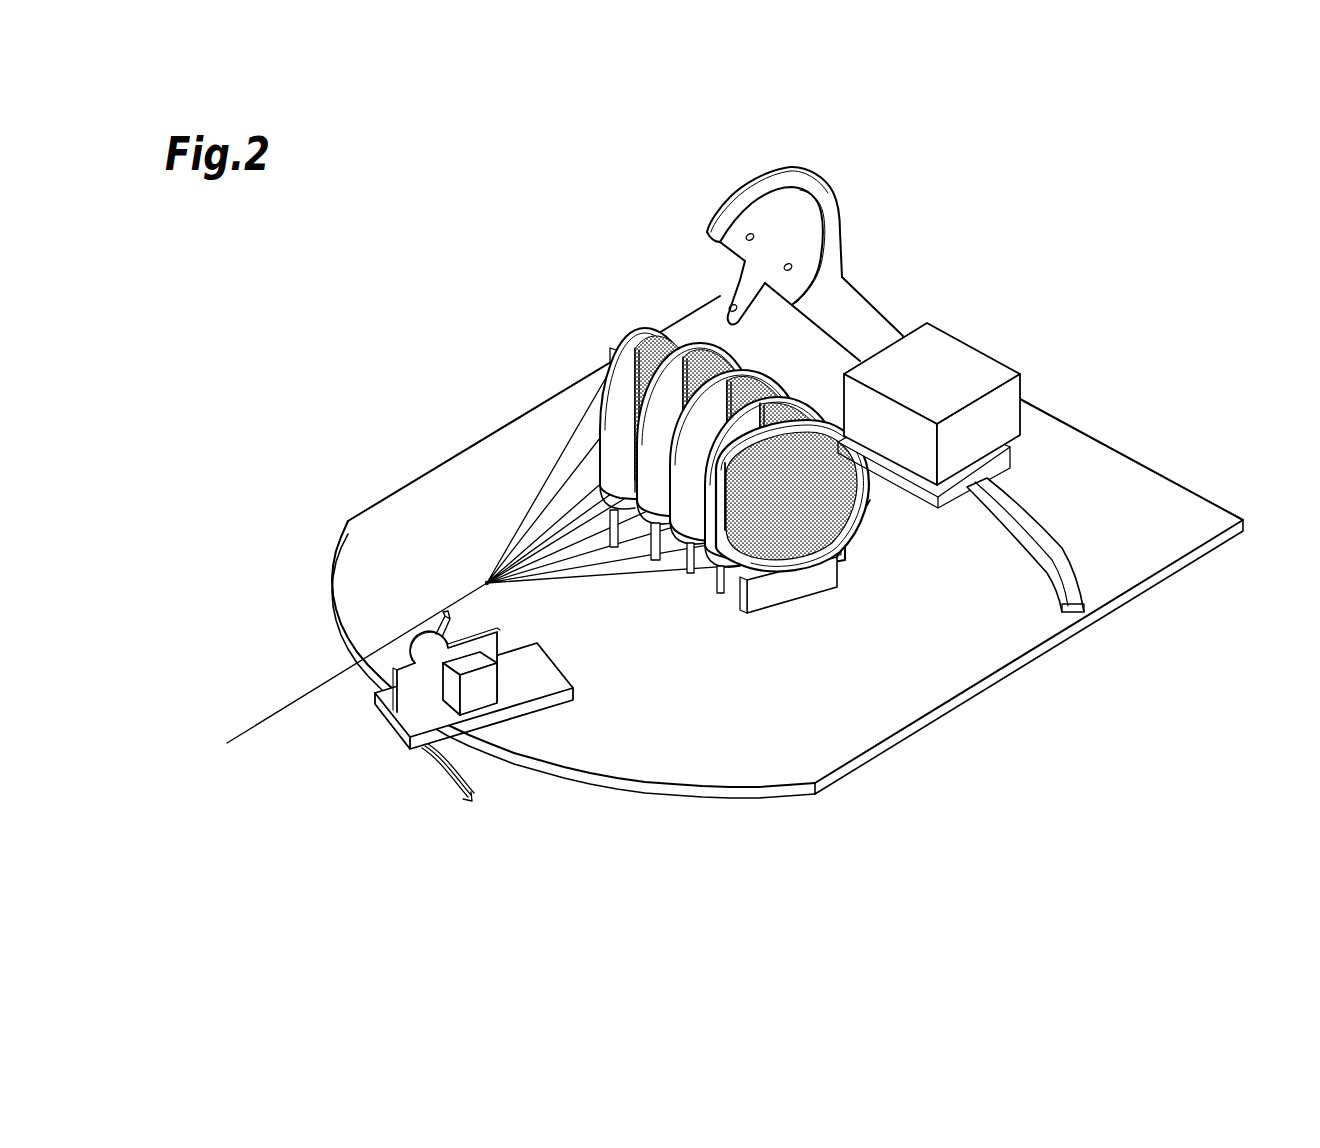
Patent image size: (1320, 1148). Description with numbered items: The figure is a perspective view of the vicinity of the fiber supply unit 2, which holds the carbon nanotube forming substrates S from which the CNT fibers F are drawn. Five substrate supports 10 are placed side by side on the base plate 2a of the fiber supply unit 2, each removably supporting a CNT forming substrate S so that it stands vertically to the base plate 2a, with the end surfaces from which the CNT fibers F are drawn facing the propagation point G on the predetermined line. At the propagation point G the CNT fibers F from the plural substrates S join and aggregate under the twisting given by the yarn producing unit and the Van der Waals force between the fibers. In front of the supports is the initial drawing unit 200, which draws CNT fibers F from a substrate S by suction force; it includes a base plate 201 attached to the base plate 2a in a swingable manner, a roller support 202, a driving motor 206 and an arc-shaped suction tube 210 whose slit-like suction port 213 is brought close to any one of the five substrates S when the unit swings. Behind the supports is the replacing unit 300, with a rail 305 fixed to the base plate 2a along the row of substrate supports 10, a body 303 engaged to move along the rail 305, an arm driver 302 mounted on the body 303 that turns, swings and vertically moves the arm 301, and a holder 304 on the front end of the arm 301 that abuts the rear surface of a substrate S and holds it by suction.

The fiber supply unit 2 is at (383, 495).
The base plate 2a is at (348, 568).
The substrate support 10 is at (780, 421).
The initial drawing unit 200 is at (473, 705).
The base plate 201 is at (540, 662).
The roller support 202 is at (388, 685).
The driving motor 206 is at (470, 670).
The suction tube 210 is at (437, 777).
The suction port 213 is at (448, 610).
The replacing unit 300 is at (989, 382).
The arm 301 is at (835, 300).
The arm driver 302 is at (1005, 405).
The body 303 is at (1000, 468).
The holder 304 is at (760, 220).
The rail 305 is at (1040, 543).
The carbon nanotube forming substrate S is at (710, 347).
The carbon nanotube fibers F is at (563, 465).
The propagation point G is at (483, 580).